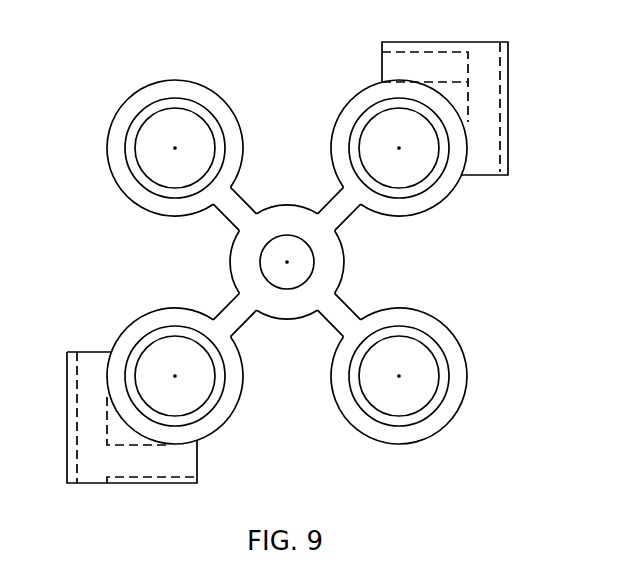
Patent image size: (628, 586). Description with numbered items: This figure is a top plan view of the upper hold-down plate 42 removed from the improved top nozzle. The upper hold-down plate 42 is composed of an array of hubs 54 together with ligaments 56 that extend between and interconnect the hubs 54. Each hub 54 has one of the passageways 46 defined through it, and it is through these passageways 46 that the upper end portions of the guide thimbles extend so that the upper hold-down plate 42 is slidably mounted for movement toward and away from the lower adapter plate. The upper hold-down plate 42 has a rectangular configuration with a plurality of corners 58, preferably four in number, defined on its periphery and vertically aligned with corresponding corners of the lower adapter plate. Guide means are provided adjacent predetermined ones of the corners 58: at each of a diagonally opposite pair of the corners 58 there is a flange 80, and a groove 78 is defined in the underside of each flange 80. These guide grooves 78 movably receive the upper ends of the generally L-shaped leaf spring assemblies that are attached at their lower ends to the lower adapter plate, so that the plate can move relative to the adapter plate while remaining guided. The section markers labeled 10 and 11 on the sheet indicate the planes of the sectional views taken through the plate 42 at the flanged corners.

The upper hold-down plate 42 is at (440, 320).
The passageways 46 is at (365, 381).
The hubs 54 is at (160, 307).
The ligaments 56 is at (323, 198).
The corners 58 is at (460, 103).
The groove 78 is at (498, 148).
The flange 80 is at (508, 122).
The section line 10- 10 is at (22, 535).
The section line 11- 11 is at (522, 0).